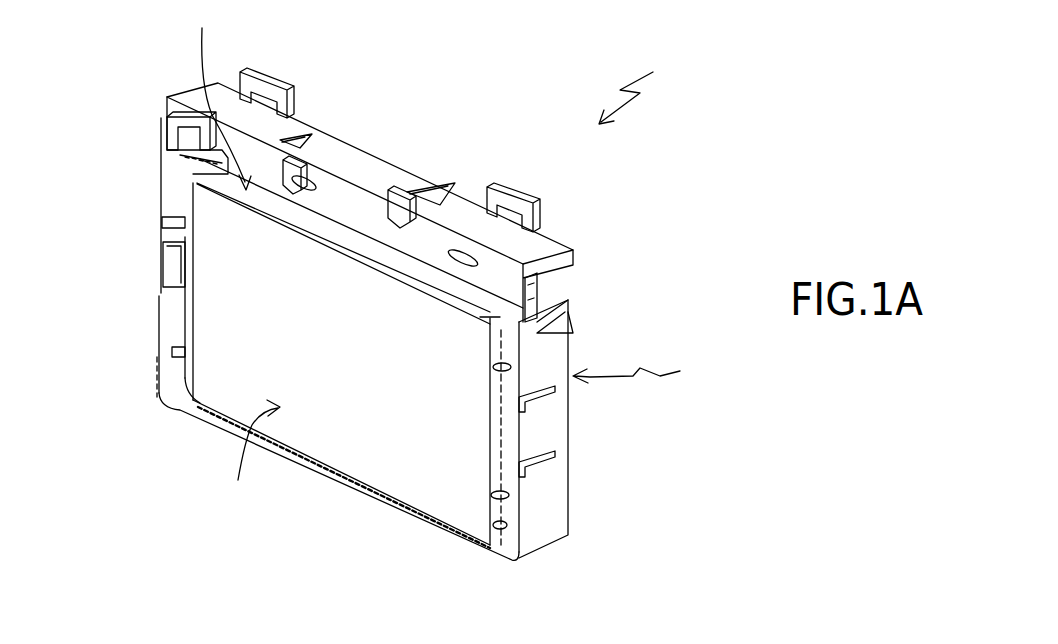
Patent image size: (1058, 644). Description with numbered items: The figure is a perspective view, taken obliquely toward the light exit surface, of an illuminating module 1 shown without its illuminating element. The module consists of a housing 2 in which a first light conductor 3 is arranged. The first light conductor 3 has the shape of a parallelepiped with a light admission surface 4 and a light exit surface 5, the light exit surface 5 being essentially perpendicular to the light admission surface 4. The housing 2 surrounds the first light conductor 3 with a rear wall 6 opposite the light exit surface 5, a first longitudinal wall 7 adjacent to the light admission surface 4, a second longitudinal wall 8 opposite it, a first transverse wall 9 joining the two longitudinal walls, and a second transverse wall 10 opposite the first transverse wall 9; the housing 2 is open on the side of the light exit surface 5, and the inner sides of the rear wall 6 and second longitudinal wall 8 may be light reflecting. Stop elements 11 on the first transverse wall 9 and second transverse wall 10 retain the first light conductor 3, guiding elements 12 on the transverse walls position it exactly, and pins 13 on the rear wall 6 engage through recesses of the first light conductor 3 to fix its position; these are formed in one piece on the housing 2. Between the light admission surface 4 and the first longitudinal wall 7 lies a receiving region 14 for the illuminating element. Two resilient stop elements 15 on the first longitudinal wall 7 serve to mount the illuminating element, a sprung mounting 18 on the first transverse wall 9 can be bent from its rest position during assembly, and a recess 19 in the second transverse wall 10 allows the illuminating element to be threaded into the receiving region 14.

The illuminating module 1 is at (637, 88).
The housing 2 is at (160, 400).
The first light conductor 3 is at (333, 378).
The light admission surface 4 is at (223, 95).
The light exit surface 5 is at (249, 464).
The rear wall 6 is at (639, 375).
The first longitudinal wall 7 is at (373, 170).
The second longitudinal wall 8 is at (347, 490).
The first transverse wall 9 is at (157, 198).
The second transverse wall 10 is at (550, 508).
The stop elements 11 is at (170, 268).
The guiding elements 12 is at (548, 333).
The pins 13 is at (183, 231).
The receiving region 14 is at (342, 211).
The stop element 15 is at (312, 147).
The sprung mounting 18 is at (165, 113).
The recess 19 is at (572, 302).